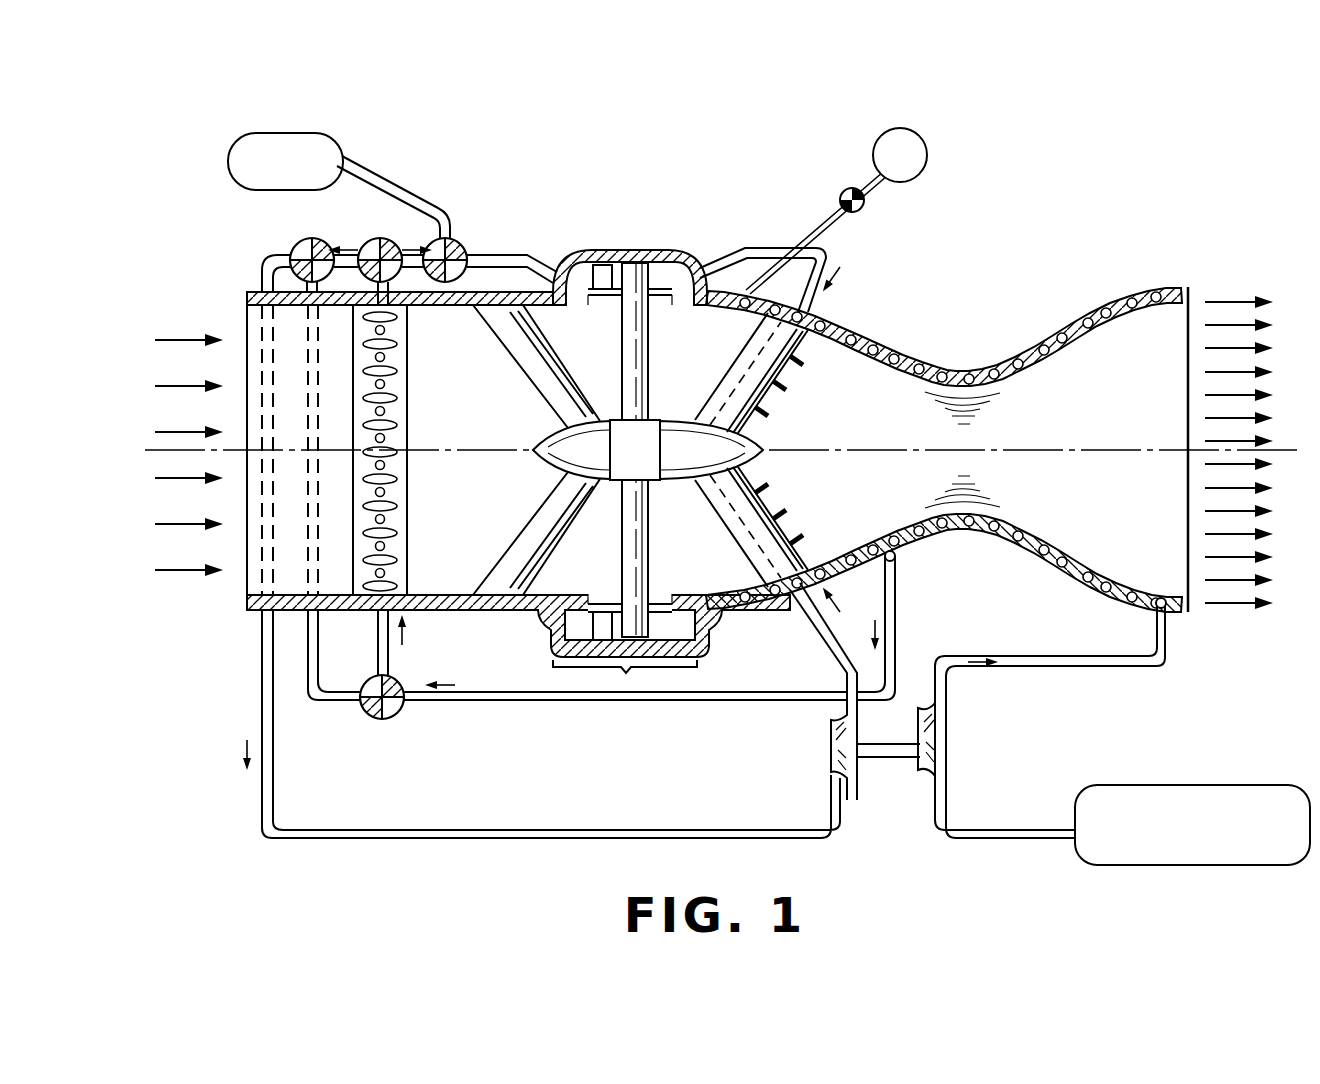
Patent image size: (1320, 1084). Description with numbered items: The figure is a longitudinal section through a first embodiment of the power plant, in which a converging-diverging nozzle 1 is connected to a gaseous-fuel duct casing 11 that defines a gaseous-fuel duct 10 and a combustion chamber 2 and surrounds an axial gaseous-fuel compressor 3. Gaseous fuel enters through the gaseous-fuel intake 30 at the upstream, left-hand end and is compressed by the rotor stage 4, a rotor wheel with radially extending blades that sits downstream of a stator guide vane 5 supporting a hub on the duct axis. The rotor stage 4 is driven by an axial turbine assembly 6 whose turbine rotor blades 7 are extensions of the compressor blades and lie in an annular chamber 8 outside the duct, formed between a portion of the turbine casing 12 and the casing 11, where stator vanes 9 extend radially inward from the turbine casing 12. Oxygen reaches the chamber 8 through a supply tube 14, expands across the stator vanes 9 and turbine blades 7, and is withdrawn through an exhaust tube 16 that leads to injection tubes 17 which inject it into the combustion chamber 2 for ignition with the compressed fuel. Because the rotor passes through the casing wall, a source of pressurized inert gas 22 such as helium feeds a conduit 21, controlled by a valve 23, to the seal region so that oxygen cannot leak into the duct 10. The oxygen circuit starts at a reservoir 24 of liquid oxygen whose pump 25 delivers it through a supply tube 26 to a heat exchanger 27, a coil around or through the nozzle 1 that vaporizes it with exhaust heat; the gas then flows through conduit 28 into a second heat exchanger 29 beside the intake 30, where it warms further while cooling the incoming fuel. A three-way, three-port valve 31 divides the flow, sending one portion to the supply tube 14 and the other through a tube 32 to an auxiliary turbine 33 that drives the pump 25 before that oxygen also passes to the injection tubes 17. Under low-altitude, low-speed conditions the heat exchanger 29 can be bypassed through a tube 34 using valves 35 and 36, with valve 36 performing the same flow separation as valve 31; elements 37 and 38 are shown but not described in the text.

The converging-diverging nozzle 1 is at (1142, 330).
The combustion chamber 2 is at (840, 352).
The axial gaseous-fuel compressor 3 is at (532, 612).
The rotor stage 4 is at (640, 555).
The stator guide vane 5 is at (520, 540).
The axial turbine assembly 6 is at (625, 681).
The turbine rotor blade 7 is at (630, 262).
The annular chamber 8 is at (700, 642).
The stator vanes 9 is at (600, 266).
The gaseous-fuel duct 10 is at (735, 604).
The gaseous-fuel duct casing 11 is at (545, 310).
The turbine casing 12 is at (676, 252).
The supply tube 14 is at (523, 258).
The exhaust tube 16 is at (832, 262).
The injection tubes 17 is at (735, 360).
The conduit 21 is at (814, 230).
The source of pressurized inert gas 22 is at (874, 160).
The valve 23 is at (840, 200).
The reservoir 24 is at (1192, 825).
The pump 25 is at (950, 748).
The supply tube 26 is at (1167, 650).
The heat exchanger 27 is at (1068, 578).
The conduit 28 is at (612, 702).
The second heat exchanger 29 is at (408, 385).
The gaseous-fuel intake 30 is at (262, 300).
The three-way, three-port valve 31 is at (380, 243).
The tube 32 is at (263, 262).
The auxiliary turbine 33 is at (830, 750).
The tube 34 is at (312, 672).
The valve 35 is at (378, 719).
The valve 36 is at (300, 243).
The valve 37 is at (458, 243).
The reservoir 38 is at (339, 185).